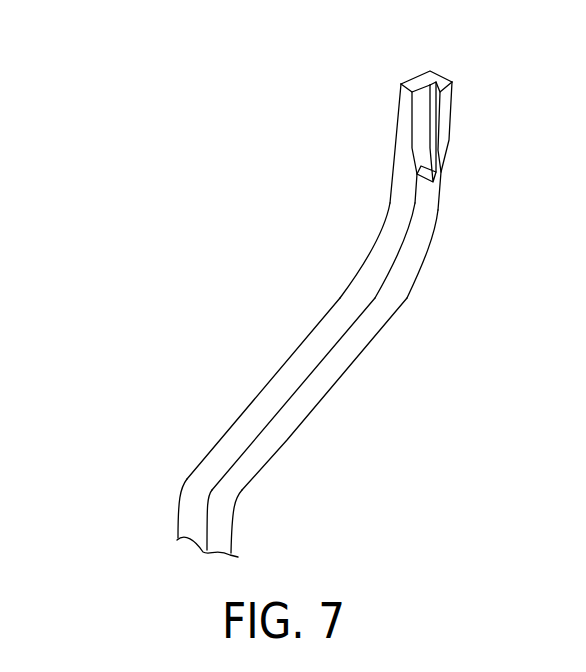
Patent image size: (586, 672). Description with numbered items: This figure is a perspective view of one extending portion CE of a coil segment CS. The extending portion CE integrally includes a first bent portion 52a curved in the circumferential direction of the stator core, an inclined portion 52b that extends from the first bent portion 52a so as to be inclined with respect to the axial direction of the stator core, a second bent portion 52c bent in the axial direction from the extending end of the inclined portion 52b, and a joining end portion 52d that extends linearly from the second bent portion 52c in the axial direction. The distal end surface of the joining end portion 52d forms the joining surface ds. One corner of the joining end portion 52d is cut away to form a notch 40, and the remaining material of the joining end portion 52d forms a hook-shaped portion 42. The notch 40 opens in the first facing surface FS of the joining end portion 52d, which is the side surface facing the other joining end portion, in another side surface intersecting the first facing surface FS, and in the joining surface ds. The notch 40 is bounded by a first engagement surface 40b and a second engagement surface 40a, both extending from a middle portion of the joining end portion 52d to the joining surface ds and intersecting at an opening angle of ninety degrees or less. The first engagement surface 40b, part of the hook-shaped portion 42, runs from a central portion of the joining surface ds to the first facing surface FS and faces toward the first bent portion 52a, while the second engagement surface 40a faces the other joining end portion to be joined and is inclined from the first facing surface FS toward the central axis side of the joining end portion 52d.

The notch 40 is at (416, 103).
The second engagement surface 40a is at (415, 101).
The first engagement surface 40b is at (471, 127).
The hook-shaped portion 42 is at (450, 92).
The joining surface ds is at (442, 77).
The first bent portion 52a is at (225, 507).
The inclined portion 52b is at (262, 397).
The second bent portion 52c is at (423, 253).
The joining end portion 52d is at (398, 177).
The first facing surface FS is at (434, 200).
The extending portion CE is at (350, 356).
The coil segment CS is at (279, 319).